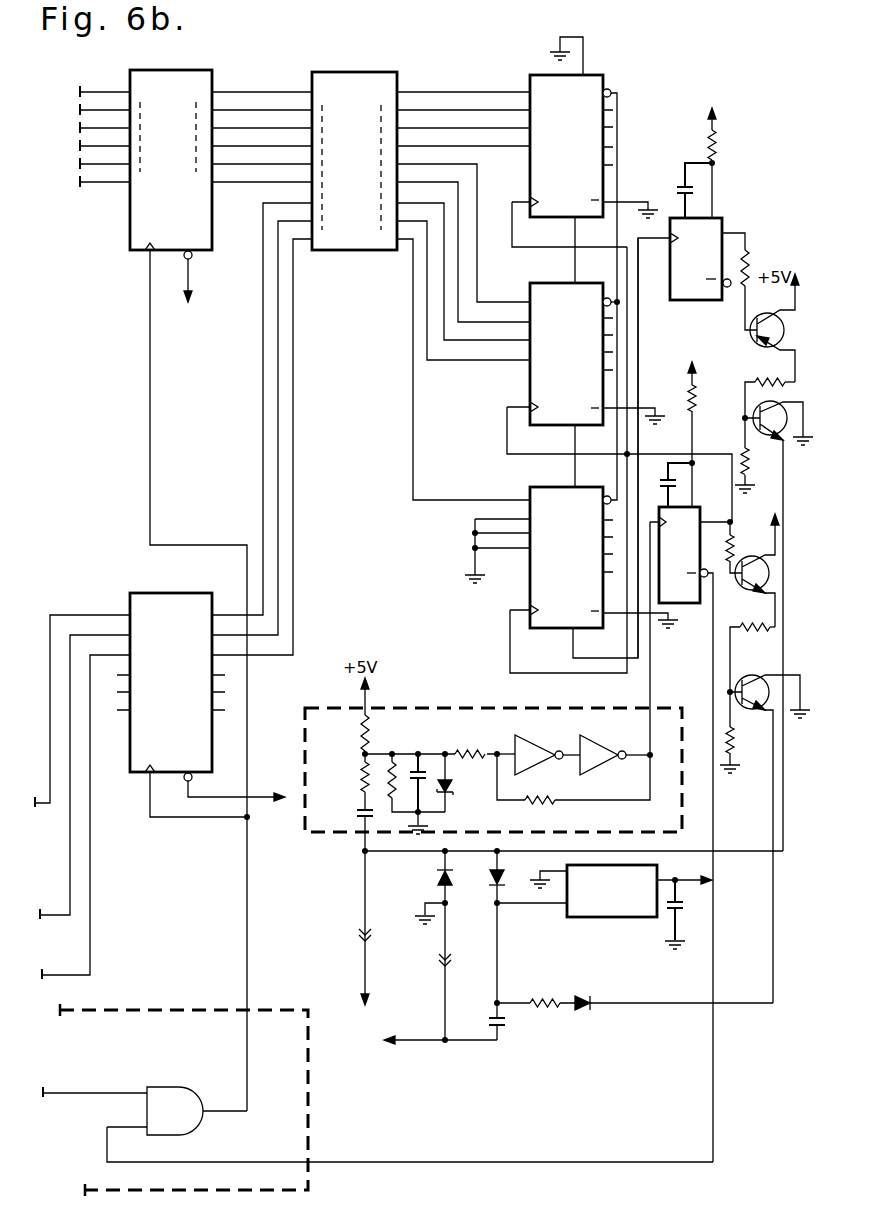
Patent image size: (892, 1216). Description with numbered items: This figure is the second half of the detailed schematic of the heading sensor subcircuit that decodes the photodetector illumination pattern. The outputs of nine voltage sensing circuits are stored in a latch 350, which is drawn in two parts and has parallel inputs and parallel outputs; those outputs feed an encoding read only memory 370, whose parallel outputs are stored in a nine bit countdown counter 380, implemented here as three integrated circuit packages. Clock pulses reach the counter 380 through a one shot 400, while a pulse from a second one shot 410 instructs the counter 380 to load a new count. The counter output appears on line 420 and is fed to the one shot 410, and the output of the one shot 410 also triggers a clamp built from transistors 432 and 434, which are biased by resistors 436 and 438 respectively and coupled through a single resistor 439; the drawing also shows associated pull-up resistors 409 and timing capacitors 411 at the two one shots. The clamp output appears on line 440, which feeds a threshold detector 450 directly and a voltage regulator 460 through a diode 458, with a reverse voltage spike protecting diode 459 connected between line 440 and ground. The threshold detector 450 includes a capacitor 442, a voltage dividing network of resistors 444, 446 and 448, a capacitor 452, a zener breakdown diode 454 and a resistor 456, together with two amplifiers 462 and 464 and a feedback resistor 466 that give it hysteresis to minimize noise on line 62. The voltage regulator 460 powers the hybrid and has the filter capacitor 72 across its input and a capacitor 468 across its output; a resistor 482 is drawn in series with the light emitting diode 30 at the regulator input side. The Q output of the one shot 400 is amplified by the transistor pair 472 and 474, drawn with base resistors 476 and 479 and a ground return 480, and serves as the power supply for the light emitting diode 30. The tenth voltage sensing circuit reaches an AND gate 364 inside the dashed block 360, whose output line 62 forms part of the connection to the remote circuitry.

The latch 350 is at (200, 70).
The encoding read only memory 370 is at (385, 72).
The nine bit countdown counter 380 is at (600, 75).
The resistor 409 is at (716, 158).
The capacitor 411 is at (679, 182).
The one shot 410 is at (722, 218).
The line 420 is at (638, 295).
The resistor 436 is at (750, 245).
The transistor 432 is at (752, 262).
The resistor 439 is at (765, 380).
The resistor 438 is at (743, 455).
The transistor 434 is at (762, 470).
The one shot 400 is at (690, 603).
The resistor 476 is at (735, 535).
The transistor 472 is at (738, 592).
The resistor 479 is at (768, 630).
The transistor 474 is at (734, 732).
The ground 480 is at (725, 773).
The line 440 is at (700, 852).
The threshold detector 450 is at (342, 708).
The resistor 444 is at (360, 732).
The resistor 446 is at (360, 776).
The resistor 448 is at (388, 790).
The capacitor 442 is at (355, 820).
The capacitor 452 is at (422, 766).
The resistor 456 is at (478, 740).
The zener breakdown diode 454 is at (450, 784).
The amplifier 462 is at (538, 750).
The amplifier 464 is at (608, 750).
The feedback resistor 466 is at (545, 805).
The reverse voltage spike protecting diode 459 is at (435, 872).
The diode 458 is at (490, 876).
The voltage regulator 460 is at (580, 917).
The capacitor 468 is at (678, 920).
The resistor 482 is at (535, 1000).
The light emitting diode 30 is at (592, 1015).
The filter capacitor 72 is at (505, 1030).
The AND gate 364 is at (168, 1087).
The logic block 360 is at (310, 1078).
The line 62 is at (325, 1170).